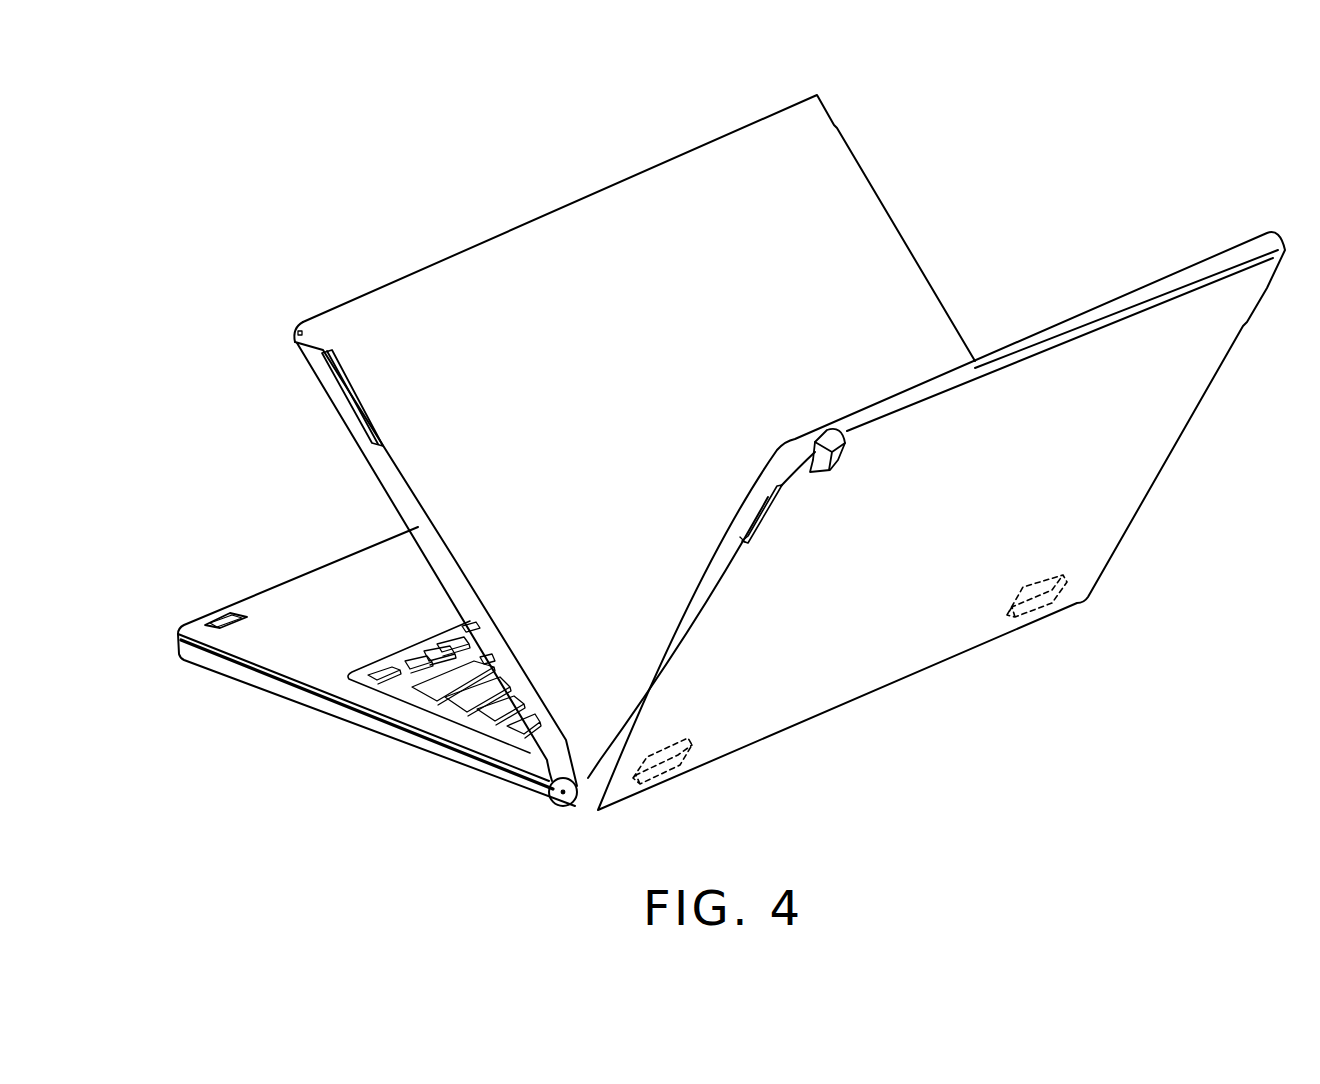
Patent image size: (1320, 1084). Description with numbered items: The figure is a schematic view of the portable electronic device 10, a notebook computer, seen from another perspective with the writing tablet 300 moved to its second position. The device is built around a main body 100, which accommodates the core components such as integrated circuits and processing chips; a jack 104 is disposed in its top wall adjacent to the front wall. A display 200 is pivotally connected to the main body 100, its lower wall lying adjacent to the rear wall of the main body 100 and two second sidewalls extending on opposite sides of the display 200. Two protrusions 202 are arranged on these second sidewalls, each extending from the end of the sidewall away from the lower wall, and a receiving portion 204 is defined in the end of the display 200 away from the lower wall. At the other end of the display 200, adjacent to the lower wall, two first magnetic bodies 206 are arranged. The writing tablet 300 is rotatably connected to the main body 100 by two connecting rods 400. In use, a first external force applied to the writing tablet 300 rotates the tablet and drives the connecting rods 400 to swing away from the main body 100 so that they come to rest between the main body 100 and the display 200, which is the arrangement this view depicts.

The portable electronic device 10 is at (423, 107).
The main body 100 is at (303, 652).
The jack 104 is at (213, 620).
The display 200 is at (747, 708).
The protrusions 202 is at (755, 513).
The receiving portion 204 is at (817, 462).
The first magnetic bodies 206 is at (1040, 597).
The writing tablet 300 is at (417, 320).
The connecting rods 400 is at (387, 470).